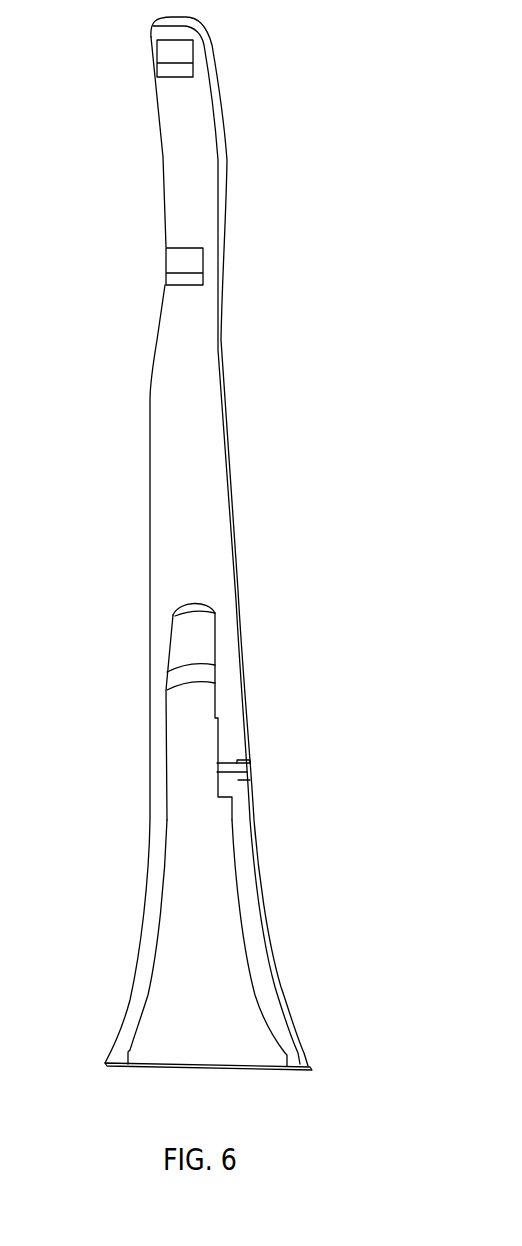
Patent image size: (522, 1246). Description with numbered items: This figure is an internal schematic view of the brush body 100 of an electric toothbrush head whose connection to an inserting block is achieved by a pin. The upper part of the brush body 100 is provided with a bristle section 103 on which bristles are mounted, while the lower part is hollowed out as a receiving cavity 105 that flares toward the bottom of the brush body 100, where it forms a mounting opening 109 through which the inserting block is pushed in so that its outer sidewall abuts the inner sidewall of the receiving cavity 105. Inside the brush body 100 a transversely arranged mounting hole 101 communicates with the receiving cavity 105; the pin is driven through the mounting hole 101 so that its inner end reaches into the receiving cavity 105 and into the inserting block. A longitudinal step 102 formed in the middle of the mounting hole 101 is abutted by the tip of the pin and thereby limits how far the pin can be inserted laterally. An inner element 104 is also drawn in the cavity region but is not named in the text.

The brush body 100 is at (184, 535).
The mounting hole 101 is at (245, 773).
The longitudinal step 102 is at (250, 762).
The bristle section 103 is at (163, 160).
The inner support post 104 is at (216, 718).
The receiving cavity 105 is at (200, 997).
The mounting opening 109 is at (193, 1067).